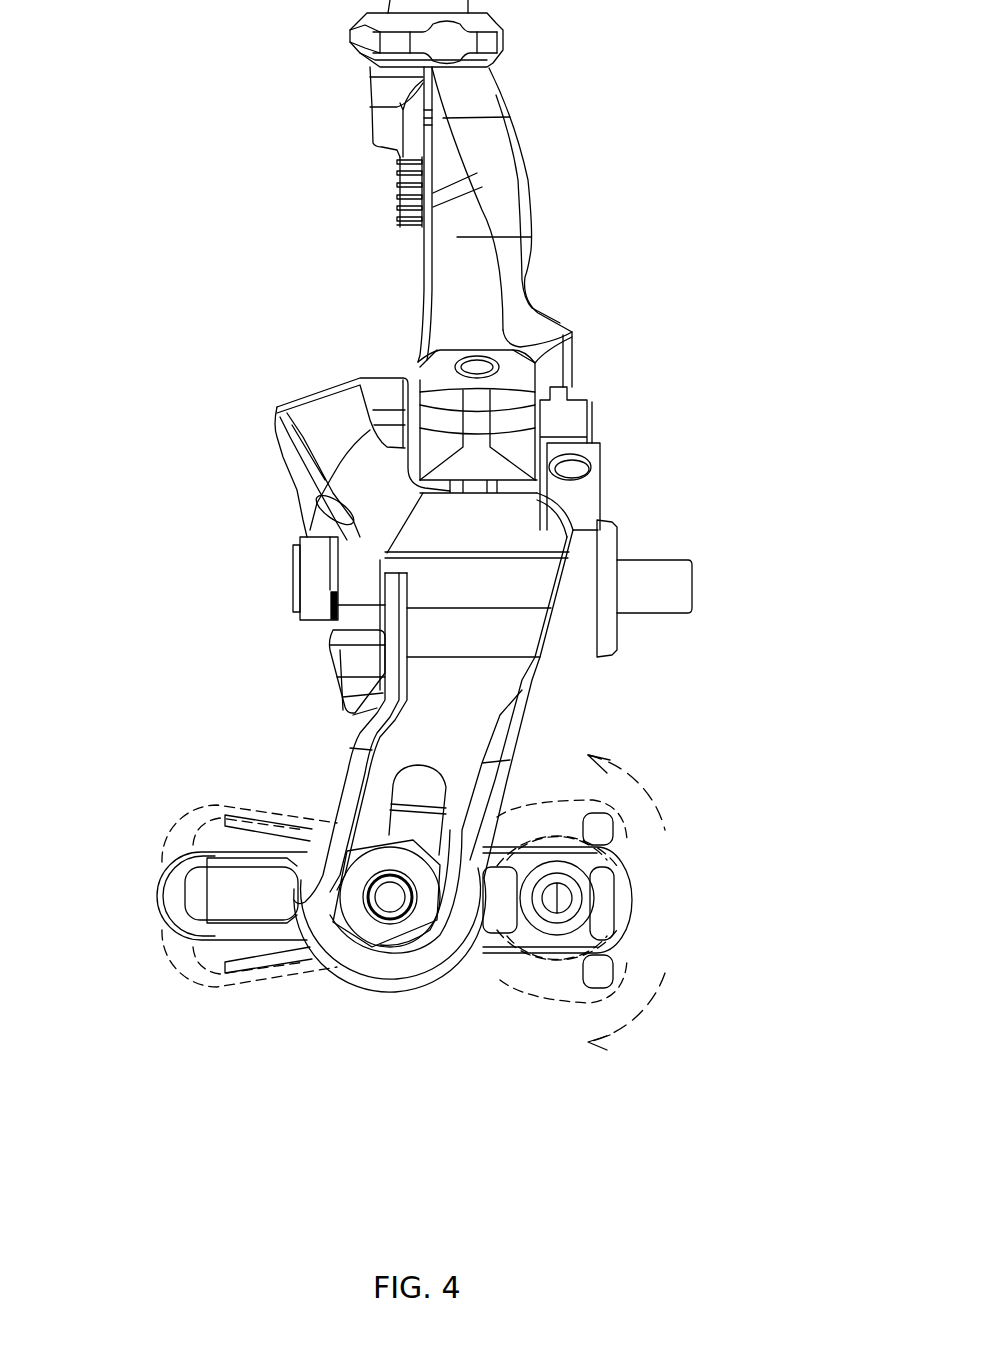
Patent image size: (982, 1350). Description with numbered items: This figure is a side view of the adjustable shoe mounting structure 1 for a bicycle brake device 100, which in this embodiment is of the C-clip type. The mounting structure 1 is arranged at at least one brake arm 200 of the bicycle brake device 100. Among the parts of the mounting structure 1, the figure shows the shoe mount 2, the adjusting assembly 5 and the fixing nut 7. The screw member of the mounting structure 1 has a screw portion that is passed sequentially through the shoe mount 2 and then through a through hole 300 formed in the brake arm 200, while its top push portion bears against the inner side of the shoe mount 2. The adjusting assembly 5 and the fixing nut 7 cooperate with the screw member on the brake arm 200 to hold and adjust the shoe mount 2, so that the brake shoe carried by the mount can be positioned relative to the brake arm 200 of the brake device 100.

The adjustable shoe mounting structure 1 is at (365, 941).
The shoe mount 2 is at (168, 896).
The adjusting assembly 5 is at (424, 973).
The fixing nut 7 is at (386, 947).
The bicycle brake device 100 is at (520, 164).
The brake arm 200 is at (442, 722).
The through hole 300 is at (407, 787).